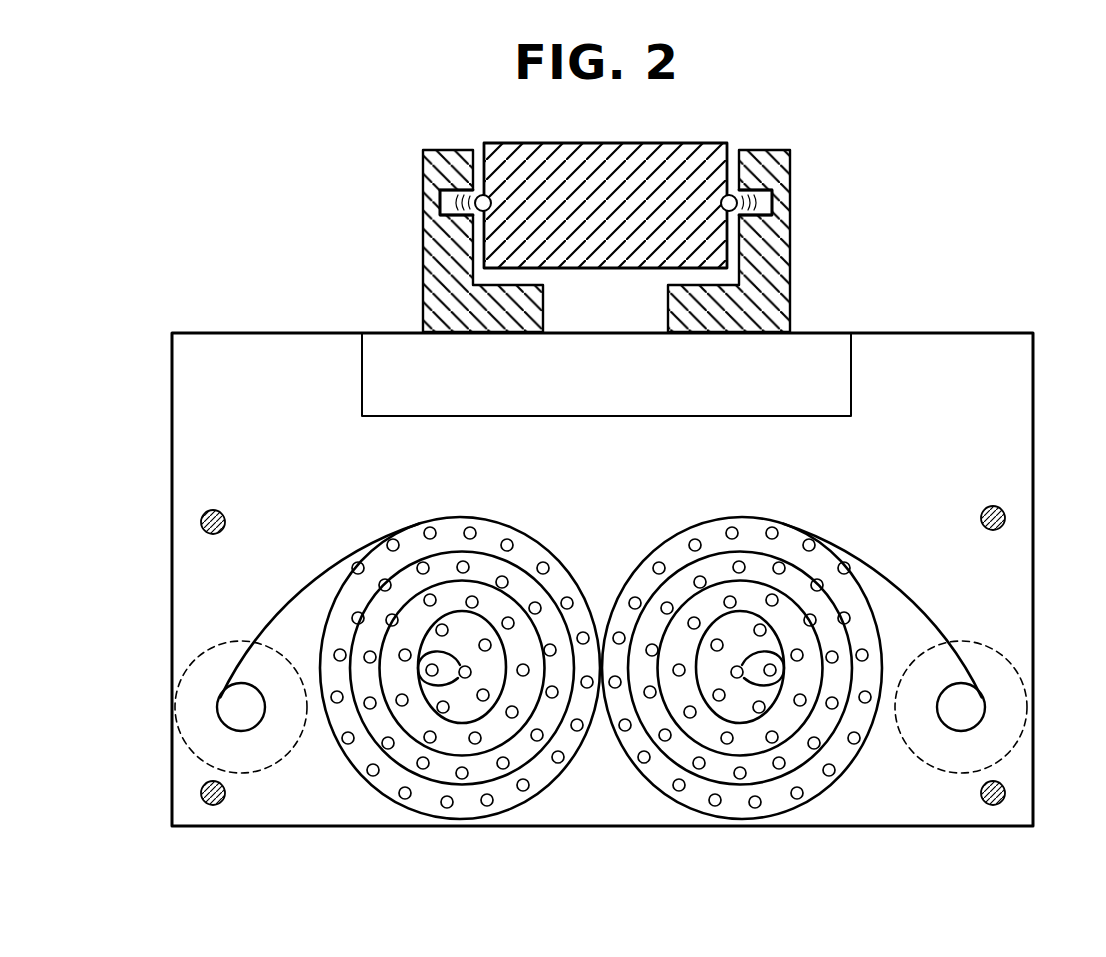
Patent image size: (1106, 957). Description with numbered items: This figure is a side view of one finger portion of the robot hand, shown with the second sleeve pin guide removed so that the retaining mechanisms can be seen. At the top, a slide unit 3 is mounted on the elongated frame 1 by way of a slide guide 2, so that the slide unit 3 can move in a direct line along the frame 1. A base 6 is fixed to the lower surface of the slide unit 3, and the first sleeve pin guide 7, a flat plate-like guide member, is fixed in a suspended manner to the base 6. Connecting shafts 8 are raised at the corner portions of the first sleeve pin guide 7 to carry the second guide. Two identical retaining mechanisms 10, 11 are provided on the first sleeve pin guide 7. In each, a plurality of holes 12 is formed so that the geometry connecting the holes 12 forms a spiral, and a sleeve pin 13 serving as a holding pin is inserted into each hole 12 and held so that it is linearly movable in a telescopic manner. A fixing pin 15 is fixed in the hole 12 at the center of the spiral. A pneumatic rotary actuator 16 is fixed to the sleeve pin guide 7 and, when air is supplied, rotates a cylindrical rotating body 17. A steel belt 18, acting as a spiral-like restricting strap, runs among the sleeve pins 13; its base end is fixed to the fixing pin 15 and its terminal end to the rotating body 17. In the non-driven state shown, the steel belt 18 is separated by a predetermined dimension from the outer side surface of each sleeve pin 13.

The frame 1 is at (620, 142).
The slide guide 2 is at (482, 195).
The slide unit 3 is at (443, 149).
The base 6 is at (851, 365).
The first sleeve pin guide 7 is at (1033, 417).
The connecting shaft 8 is at (200, 522).
The retaining mechanism 10 is at (316, 766).
The retaining mechanism 11 is at (864, 766).
The hole 12 is at (441, 803).
The sleeve pin 13 is at (489, 806).
The fixing pin 15 is at (459, 671).
The pneumatic rotary actuator 16 is at (178, 655).
The rotating body 17 is at (258, 726).
The steel belt 18 is at (434, 517).